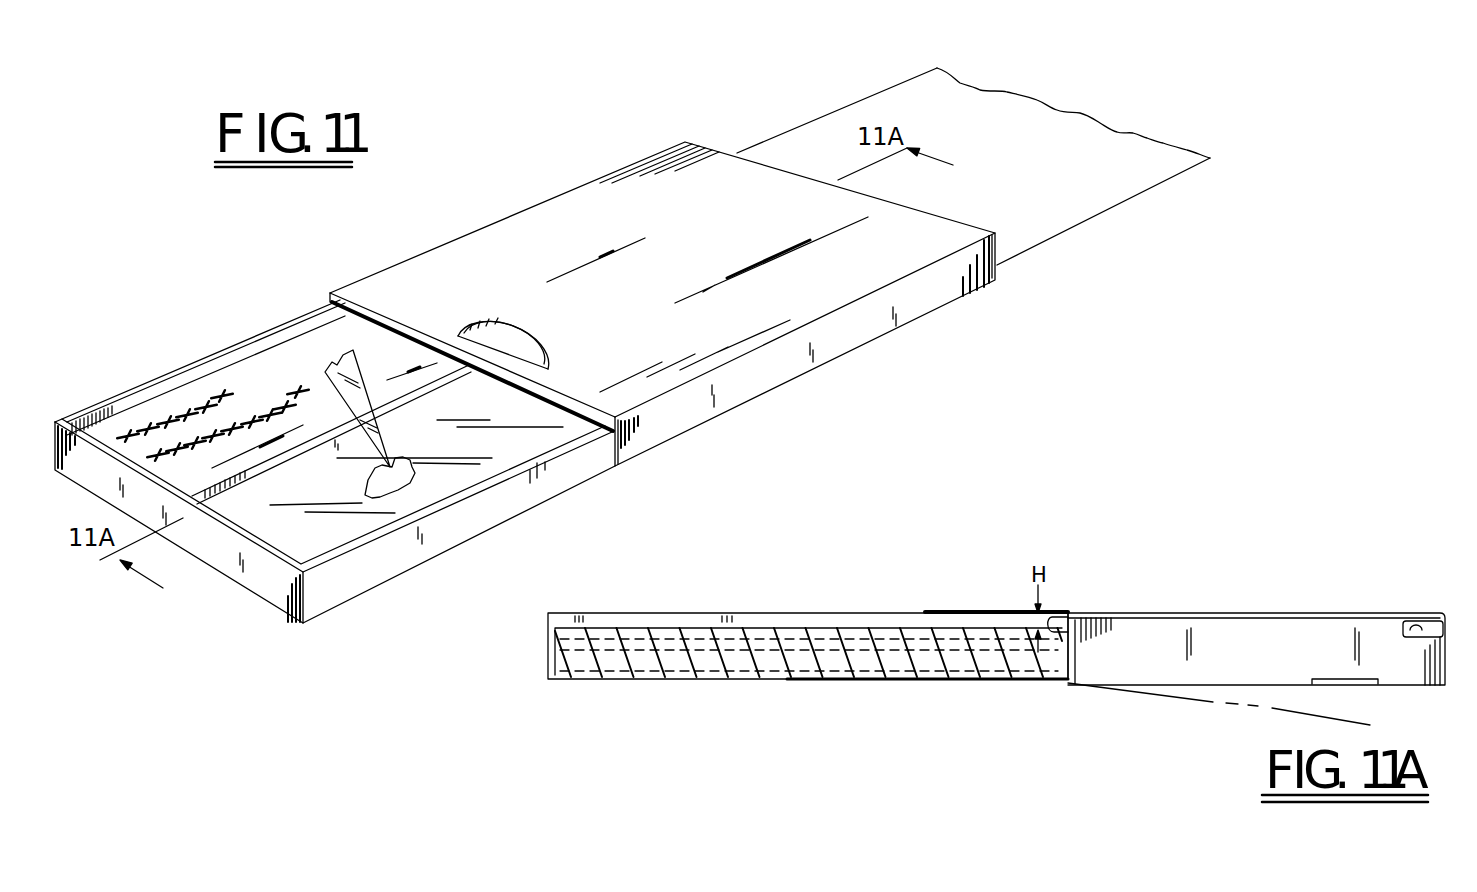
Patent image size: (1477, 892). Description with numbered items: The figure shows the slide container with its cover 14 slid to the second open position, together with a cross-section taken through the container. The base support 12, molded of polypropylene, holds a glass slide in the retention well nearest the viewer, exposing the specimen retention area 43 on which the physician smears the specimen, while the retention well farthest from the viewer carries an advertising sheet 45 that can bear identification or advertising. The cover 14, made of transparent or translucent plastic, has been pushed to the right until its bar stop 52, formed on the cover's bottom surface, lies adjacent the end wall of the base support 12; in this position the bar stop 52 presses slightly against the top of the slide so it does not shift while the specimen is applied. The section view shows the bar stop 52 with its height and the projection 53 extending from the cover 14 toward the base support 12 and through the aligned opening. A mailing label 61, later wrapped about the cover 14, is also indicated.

In FIG. 11, the base support 12 is at (377, 567).
In FIG. 11A, the base support 12 is at (690, 613).
In FIG. 11, the cover 14 is at (732, 233).
In FIG. 11A, the cover 14 is at (1300, 612).
In FIG. 11, the specimen retention area 43 is at (412, 479).
In FIG. 11, the advertising sheet 45 is at (300, 345).
In FIG. 11A, the bar stop 52 is at (1057, 620).
In FIG. 11A, the projection 53 is at (1417, 622).
In FIG. 11, the mailing label 61 is at (1123, 196).
In FIG. 11A, the mailing label 61 is at (1203, 707).